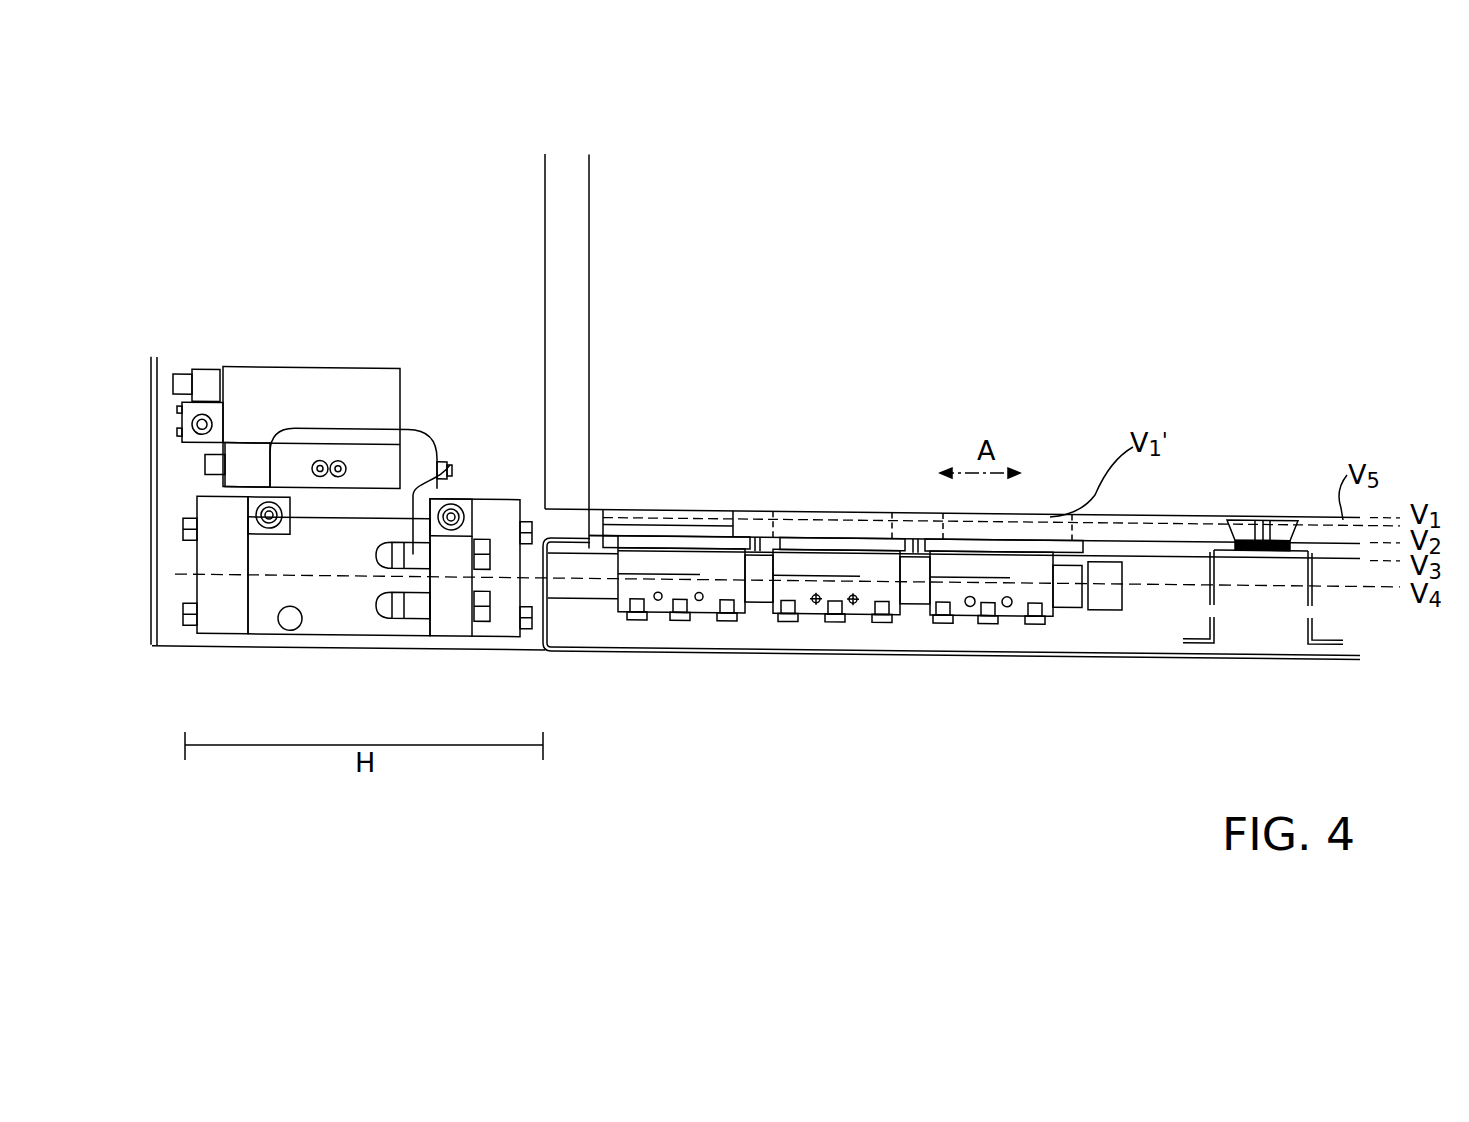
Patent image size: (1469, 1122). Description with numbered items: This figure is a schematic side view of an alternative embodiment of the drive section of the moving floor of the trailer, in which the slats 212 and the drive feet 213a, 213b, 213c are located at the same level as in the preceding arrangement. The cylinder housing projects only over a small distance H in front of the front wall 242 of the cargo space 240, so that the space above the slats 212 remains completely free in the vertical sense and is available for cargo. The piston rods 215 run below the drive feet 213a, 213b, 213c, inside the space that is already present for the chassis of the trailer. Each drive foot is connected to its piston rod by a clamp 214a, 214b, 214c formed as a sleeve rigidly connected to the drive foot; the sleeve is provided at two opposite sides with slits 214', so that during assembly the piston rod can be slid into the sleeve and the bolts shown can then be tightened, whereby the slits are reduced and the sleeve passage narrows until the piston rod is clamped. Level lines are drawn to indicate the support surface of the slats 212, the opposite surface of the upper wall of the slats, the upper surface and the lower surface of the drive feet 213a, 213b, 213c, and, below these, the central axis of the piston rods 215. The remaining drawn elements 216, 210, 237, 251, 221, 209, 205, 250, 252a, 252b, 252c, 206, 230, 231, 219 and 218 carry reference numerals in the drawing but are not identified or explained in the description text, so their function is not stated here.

The valve unit 216 is at (316, 305).
The front wall 242 is at (567, 243).
The upright support 210 is at (576, 397).
The cargo space 240 is at (937, 276).
The solenoid valve 237 is at (385, 393).
The fitting 251 is at (438, 452).
The support bar 221 is at (152, 458).
The base plate 209 is at (152, 627).
The manifold block 205 is at (330, 598).
The slat 212 is at (1138, 527).
The piston rod 215 is at (547, 507).
The rail segment 250 is at (768, 510).
The rail section 252c is at (712, 527).
The rail section 252b is at (895, 517).
The rail section 252a is at (968, 525).
The drive foot 213c is at (677, 523).
The drive foot 213b is at (880, 515).
The drive foot 213a is at (997, 547).
The cylinder 206 is at (810, 557).
The slit 214' is at (630, 662).
The clamp 214c is at (665, 613).
The clamp 214b is at (828, 603).
The clamp 214a is at (1012, 600).
The housing end 231 is at (565, 650).
The housing channel 230 is at (1088, 652).
The bracket 219 is at (1308, 600).
The stop cap 218 is at (1290, 518).